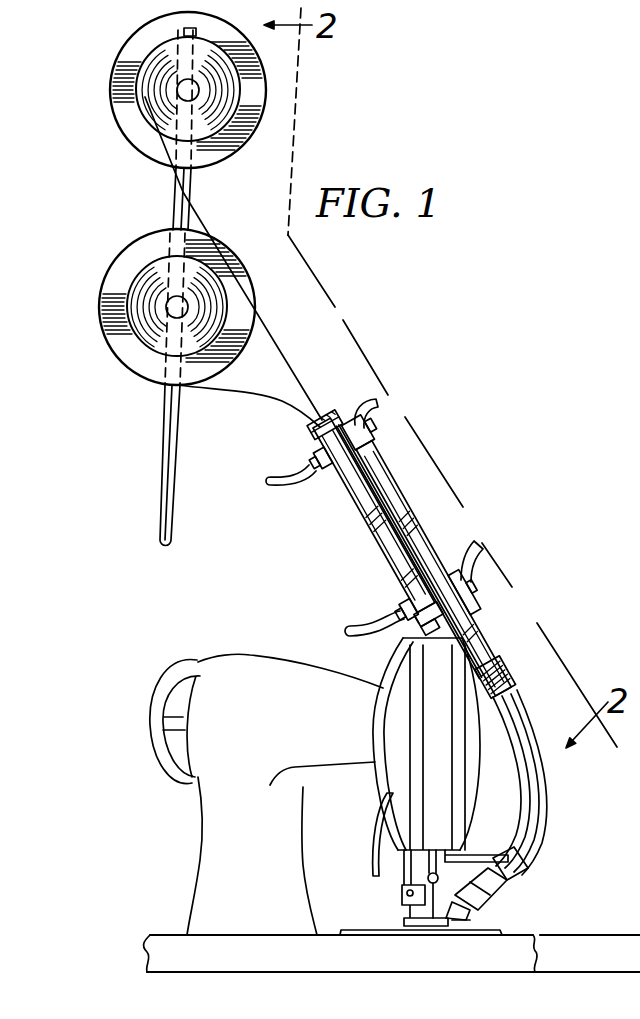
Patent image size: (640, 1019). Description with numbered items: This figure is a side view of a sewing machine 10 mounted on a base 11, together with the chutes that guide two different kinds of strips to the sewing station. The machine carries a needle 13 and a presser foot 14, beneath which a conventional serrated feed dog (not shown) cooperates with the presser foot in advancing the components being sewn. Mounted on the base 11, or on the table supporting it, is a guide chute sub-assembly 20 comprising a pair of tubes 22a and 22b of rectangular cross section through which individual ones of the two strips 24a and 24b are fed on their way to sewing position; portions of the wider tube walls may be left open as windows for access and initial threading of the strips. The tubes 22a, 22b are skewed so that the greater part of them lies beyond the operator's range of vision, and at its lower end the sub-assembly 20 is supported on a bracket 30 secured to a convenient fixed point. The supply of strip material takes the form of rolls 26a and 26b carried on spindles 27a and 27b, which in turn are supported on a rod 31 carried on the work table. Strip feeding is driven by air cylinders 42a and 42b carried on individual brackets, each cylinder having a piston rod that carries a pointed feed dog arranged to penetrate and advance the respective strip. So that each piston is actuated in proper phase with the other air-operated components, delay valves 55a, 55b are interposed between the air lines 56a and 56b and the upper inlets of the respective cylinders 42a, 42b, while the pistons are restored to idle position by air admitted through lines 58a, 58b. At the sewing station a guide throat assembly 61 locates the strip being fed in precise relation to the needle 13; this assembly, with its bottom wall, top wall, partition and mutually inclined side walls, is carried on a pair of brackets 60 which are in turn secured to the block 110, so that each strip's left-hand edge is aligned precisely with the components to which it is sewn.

The sewing machine 10 is at (256, 638).
The base 11 is at (162, 945).
The needle 13 is at (470, 908).
The presser foot 14 is at (438, 912).
The guide chute sub-assembly 20 is at (391, 538).
The tube 22a is at (526, 824).
The tube 22b is at (553, 824).
The strip 24a is at (278, 400).
The strip 24b is at (281, 348).
The roll 26a is at (140, 333).
The roll 26b is at (147, 97).
The spindle 27a is at (173, 300).
The spindle 27b is at (184, 84).
The bracket 30 is at (510, 883).
The rod 31 is at (168, 458).
The air cylinder 42a is at (363, 537).
The air cylinder 42b is at (420, 517).
The delay valve 55a is at (311, 472).
The delay valve 55b is at (368, 432).
The air line 56a is at (271, 473).
The air line 56b is at (392, 410).
The line 58a is at (378, 615).
The line 58b is at (482, 556).
The bracket 60 is at (495, 896).
The guide throat assembly 61 is at (492, 915).
The block 110 is at (477, 866).